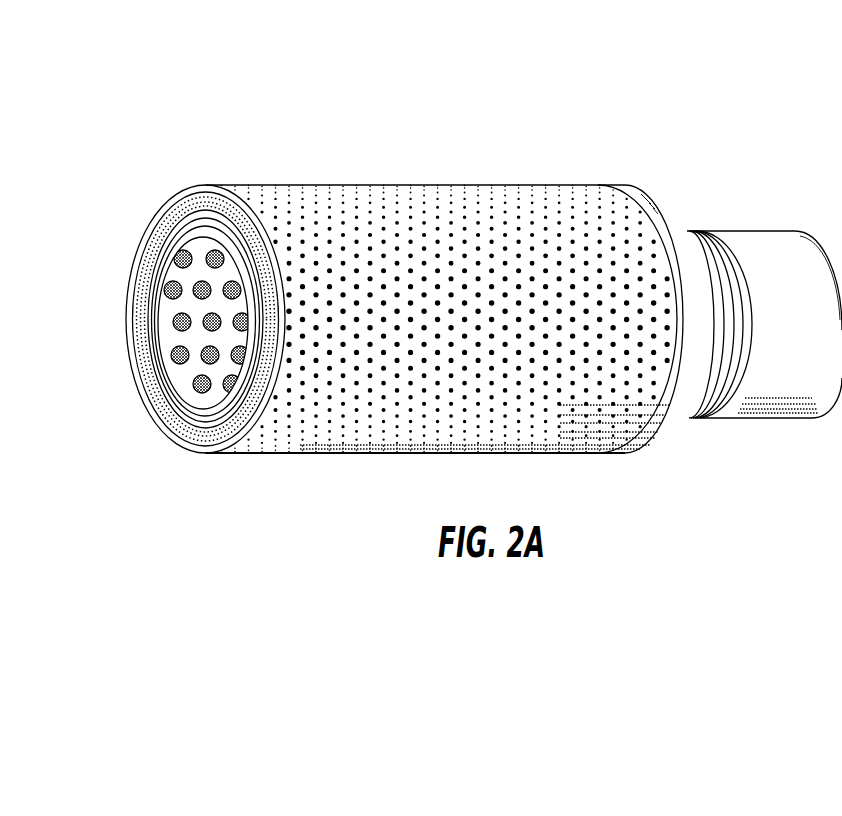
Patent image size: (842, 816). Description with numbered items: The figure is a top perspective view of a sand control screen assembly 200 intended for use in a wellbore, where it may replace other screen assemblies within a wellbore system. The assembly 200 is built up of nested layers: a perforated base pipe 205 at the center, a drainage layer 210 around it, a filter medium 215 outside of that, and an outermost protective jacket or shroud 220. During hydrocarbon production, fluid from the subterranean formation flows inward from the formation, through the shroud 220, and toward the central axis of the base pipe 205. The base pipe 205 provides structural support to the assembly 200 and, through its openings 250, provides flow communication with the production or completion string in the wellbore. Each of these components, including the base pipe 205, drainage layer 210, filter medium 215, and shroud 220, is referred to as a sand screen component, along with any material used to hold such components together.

The sand control screen assembly 200 is at (178, 79).
The perforated base pipe 205 is at (163, 362).
The drainage layer 210 is at (147, 317).
The filter medium 215 is at (138, 272).
The protective jacket or shroud 220 is at (447, 163).
The openings 250 is at (177, 328).